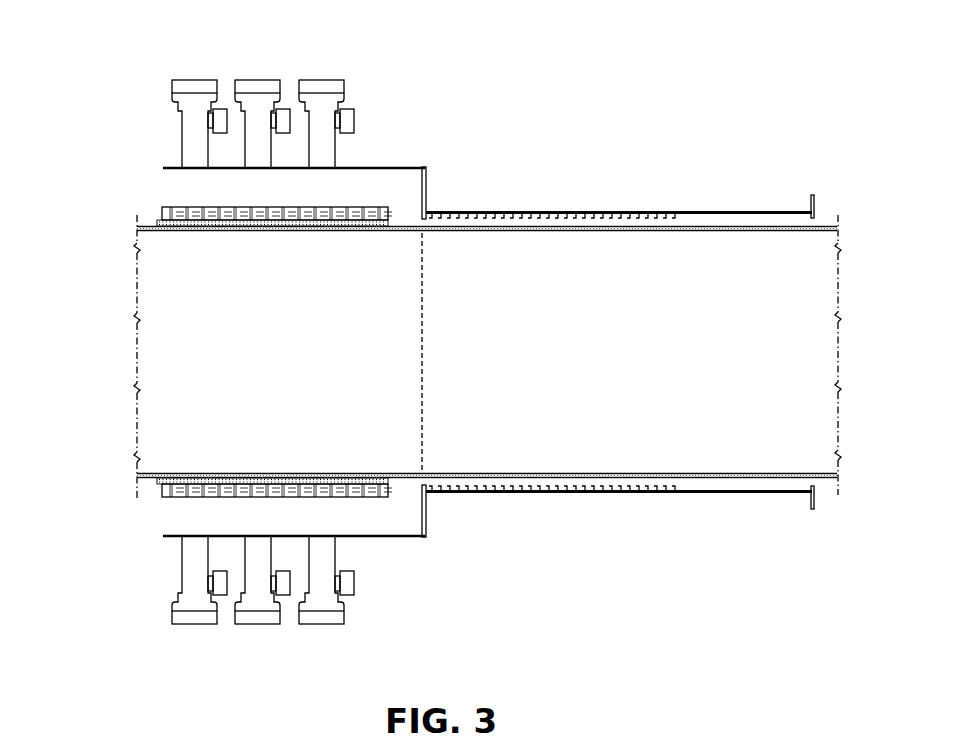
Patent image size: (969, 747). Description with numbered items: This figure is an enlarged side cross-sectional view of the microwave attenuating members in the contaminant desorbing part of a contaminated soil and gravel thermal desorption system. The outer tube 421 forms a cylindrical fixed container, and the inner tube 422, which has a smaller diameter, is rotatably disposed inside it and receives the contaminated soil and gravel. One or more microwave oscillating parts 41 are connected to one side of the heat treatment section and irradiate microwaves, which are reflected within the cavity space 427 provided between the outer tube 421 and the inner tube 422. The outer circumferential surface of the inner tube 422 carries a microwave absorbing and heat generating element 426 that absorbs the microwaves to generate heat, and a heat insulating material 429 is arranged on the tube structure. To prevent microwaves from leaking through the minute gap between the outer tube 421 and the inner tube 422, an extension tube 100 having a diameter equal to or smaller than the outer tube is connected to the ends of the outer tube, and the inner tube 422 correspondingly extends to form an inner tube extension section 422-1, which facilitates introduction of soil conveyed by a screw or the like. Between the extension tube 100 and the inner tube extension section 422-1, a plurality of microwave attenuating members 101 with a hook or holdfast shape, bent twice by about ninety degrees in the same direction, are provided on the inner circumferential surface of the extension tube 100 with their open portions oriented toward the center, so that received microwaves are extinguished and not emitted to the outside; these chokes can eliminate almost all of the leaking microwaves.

The microwave oscillating part 41 is at (322, 93).
The outer tube 421 is at (368, 166).
The heat insulating material 429 is at (358, 212).
The microwave absorbing and heat generating element 426 is at (381, 221).
The cavity space 427 is at (178, 186).
The inner tube 422 is at (423, 500).
The inner tube extension section 422-1 is at (743, 474).
The microwave attenuating member 101 is at (615, 493).
The extension tube 100 is at (648, 493).